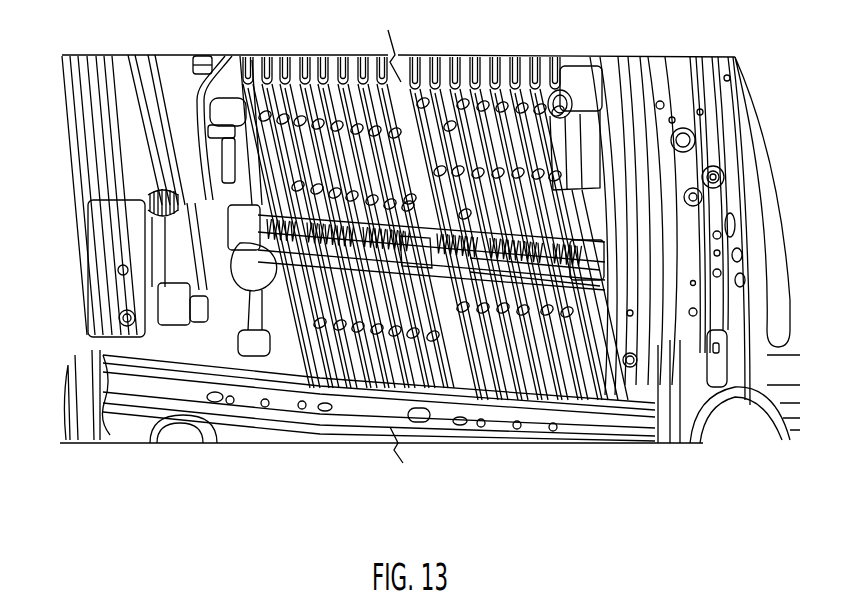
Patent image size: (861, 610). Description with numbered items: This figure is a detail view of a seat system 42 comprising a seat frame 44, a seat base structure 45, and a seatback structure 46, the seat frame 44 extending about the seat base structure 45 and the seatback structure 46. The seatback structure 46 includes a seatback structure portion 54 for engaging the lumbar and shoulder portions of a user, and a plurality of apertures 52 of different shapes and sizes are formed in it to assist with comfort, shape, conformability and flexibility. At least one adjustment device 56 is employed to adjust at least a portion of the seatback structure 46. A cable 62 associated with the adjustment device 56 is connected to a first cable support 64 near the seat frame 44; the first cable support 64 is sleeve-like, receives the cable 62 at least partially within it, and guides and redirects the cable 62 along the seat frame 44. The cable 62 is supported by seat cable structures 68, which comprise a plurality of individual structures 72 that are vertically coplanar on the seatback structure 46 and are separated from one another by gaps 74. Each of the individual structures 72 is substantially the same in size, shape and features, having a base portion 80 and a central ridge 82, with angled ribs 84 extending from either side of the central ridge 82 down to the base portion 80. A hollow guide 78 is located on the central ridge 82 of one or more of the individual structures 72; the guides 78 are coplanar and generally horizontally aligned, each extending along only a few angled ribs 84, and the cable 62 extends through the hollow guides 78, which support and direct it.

The seat system 42 is at (656, 452).
The seat frame 44 is at (135, 272).
The seat base structure 45 is at (160, 445).
The seatback structure 46 is at (262, 158).
The apertures 52 is at (536, 78).
The seatback structure portion 54 is at (262, 186).
The adjustment device 56 is at (180, 218).
The cable 62 is at (197, 112).
The first cable support 64 is at (188, 194).
The seat cable structures 68 is at (240, 238).
The individual structures 72 is at (330, 262).
The gaps 74 is at (437, 286).
The hollow guide 78 is at (300, 270).
The base portion 80 is at (500, 312).
The central ridge 82 is at (248, 321).
The angled ribs 84 is at (597, 243).